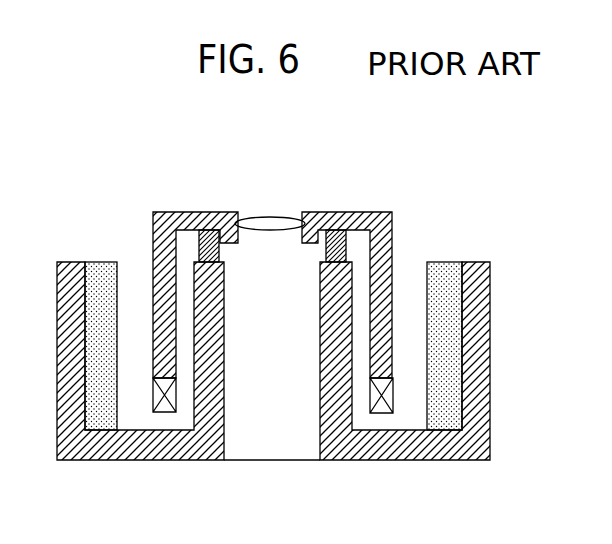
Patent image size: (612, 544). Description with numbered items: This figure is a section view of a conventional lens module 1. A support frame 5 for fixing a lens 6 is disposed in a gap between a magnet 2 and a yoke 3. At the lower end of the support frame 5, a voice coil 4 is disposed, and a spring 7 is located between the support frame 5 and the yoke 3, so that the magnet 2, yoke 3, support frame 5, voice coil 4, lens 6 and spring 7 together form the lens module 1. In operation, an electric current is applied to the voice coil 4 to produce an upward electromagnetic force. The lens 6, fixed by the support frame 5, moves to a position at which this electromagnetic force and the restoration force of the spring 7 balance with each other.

The lens module 1 is at (289, 294).
The magnet 2 is at (102, 265).
The yoke 3 is at (68, 263).
The voice coil 4 is at (168, 408).
The support frame 5 is at (392, 255).
The lens 6 is at (270, 222).
The spring 7 is at (334, 240).